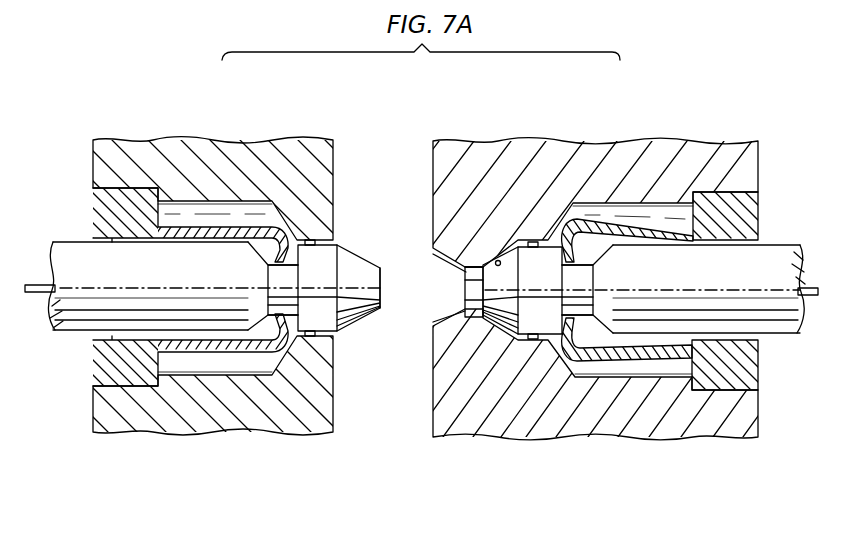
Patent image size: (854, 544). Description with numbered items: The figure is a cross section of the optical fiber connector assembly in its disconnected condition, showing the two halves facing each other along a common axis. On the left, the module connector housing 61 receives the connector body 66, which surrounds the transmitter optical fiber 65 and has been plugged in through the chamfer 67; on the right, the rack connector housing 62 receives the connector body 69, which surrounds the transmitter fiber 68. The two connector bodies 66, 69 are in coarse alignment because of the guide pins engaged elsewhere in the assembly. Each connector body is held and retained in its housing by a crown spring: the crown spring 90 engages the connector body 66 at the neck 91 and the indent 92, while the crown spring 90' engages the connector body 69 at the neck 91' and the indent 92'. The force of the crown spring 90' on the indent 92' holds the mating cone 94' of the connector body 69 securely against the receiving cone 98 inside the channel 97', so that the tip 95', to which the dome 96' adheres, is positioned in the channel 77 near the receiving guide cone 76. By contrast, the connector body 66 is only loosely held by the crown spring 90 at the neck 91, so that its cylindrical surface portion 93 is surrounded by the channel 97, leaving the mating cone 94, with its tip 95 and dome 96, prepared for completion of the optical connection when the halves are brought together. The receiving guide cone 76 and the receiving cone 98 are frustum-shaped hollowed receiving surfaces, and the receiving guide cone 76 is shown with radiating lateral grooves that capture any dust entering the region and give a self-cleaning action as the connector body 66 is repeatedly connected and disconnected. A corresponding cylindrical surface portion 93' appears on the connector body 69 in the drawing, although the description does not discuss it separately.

The module connector housing 61 is at (142, 427).
The rack connector housing 62 is at (721, 433).
The transmitter optical fiber 65 is at (45, 293).
The connector body 66 is at (63, 243).
The chamfer 67 is at (100, 240).
The transmitter fiber 68 is at (805, 297).
The connector body 69 is at (778, 245).
The receiving guide cone 76 is at (436, 252).
The channel 77 is at (470, 266).
The crown spring 90 is at (215, 241).
The crown spring 90' is at (633, 241).
The neck 91 is at (255, 281).
The neck 91' is at (607, 281).
The indent 92 is at (255, 302).
The indent 92' is at (607, 303).
The cylindrical surface portion 93 is at (303, 402).
The shoulder 93' is at (536, 403).
The mating cone 94 is at (339, 308).
The mating cone 94' is at (477, 309).
The tip 95 is at (369, 320).
The tip 95' is at (460, 319).
The dome 96 is at (392, 280).
The dome 96' is at (443, 288).
The channel 97 is at (300, 176).
The channel 97' is at (622, 235).
The receiving cone 98 is at (497, 260).